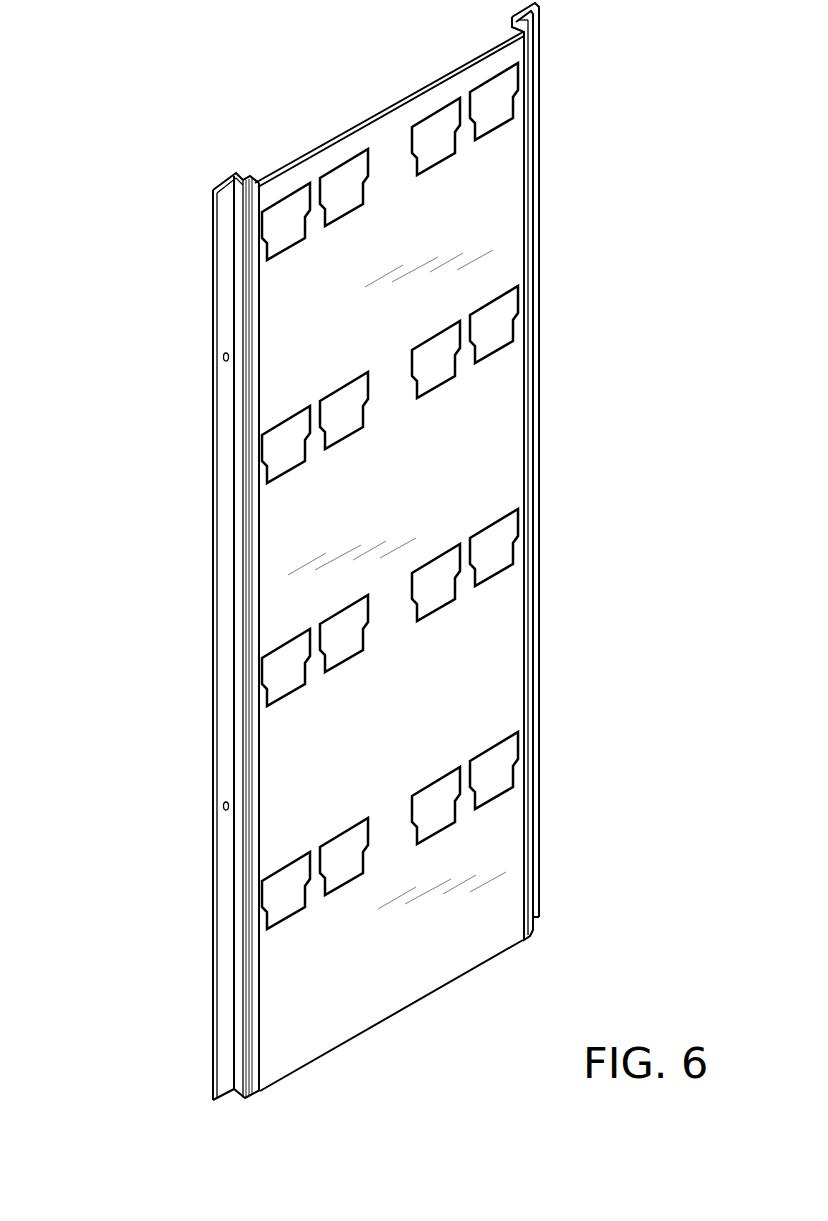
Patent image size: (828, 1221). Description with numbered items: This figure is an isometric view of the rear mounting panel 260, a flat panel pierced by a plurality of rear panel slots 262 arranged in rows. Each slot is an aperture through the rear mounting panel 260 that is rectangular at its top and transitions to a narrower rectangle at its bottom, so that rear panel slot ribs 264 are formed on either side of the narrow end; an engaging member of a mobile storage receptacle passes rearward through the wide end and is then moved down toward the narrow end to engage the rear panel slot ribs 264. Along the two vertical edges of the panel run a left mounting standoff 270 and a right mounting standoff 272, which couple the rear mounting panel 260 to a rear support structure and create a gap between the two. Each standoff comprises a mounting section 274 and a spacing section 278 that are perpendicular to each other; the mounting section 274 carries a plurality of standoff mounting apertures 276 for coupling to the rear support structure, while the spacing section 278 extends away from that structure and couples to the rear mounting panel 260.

The rear mounting panel 260 is at (392, 104).
The rear panel slots 262 is at (458, 378).
The rear panel slot ribs 264 is at (510, 792).
The left mounting standoff 270 is at (147, 636).
The right mounting standoff 272 is at (538, 203).
The mounting section 274 is at (223, 409).
The standoff mounting apertures 276 is at (224, 358).
The spacing section 278 is at (248, 305).